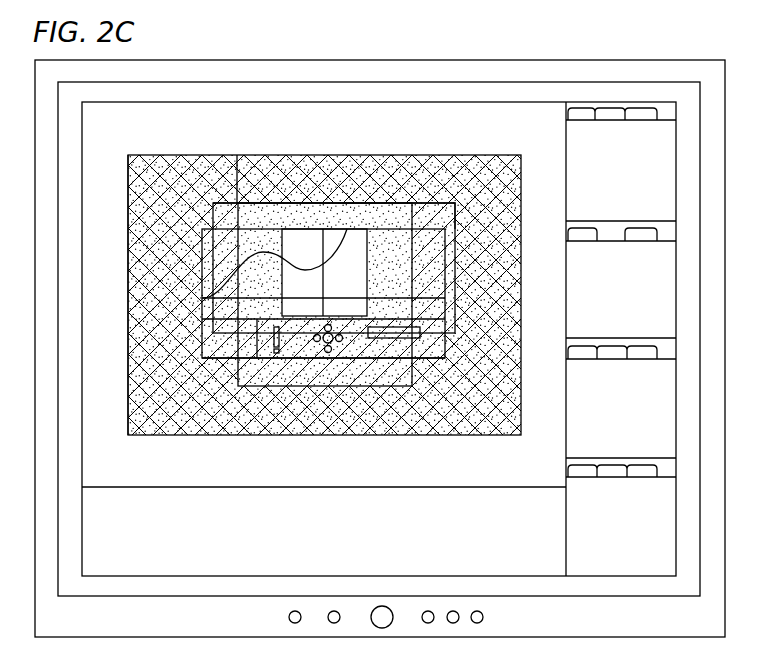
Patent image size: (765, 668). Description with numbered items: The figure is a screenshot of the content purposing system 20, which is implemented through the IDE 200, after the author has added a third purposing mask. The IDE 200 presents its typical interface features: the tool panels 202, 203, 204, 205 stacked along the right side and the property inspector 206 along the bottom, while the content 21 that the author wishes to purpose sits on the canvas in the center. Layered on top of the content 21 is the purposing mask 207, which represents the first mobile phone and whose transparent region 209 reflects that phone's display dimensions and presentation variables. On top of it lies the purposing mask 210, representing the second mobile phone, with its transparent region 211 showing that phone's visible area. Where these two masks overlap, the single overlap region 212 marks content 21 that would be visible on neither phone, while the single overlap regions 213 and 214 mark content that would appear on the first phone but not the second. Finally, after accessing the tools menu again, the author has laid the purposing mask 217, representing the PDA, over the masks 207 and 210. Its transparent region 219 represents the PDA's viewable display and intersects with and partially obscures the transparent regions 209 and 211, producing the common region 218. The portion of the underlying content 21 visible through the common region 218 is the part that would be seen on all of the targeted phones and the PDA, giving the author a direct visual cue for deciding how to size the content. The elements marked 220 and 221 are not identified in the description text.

The content purposing system 20 is at (669, 51).
The IDE 200 is at (453, 101).
The tool panel 202 is at (608, 166).
The tool panel 203 is at (608, 284).
The tool panel 204 is at (608, 401).
The tool panel 205 is at (608, 517).
The property inspector 206 is at (124, 519).
The purposing mask 207 is at (152, 155).
The transparent region 209 is at (412, 386).
The purposing mask 210 is at (368, 155).
The transparent region 211 is at (455, 292).
The single overlap region 212 is at (333, 358).
The single overlap region 213 is at (423, 230).
The single overlap region 214 is at (237, 310).
The purposing mask 217 is at (458, 155).
The common region 218 is at (361, 295).
The transparent region 219 is at (286, 240).
The window edge 220 is at (152, 267).
The boundary line 221 is at (237, 155).
The content 21 is at (213, 366).